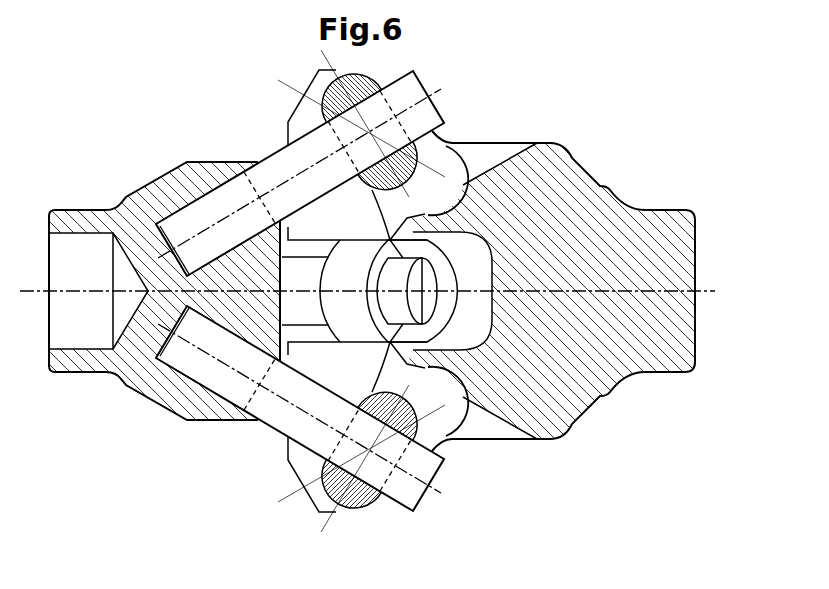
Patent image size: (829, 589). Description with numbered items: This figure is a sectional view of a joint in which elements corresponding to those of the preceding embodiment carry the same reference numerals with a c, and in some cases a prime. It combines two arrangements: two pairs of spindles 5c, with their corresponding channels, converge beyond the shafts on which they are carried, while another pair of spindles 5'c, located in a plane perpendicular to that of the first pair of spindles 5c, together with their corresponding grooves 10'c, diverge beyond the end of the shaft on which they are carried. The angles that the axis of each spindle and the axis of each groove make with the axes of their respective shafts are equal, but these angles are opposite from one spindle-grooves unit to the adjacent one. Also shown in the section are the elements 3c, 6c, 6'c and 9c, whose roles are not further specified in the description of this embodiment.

The yoke 3c is at (157, 387).
The spindles 5c is at (272, 426).
The spindles 5'c is at (300, 314).
The roller 6c is at (353, 328).
The spherical roller ring 6'c is at (367, 290).
The housing body 9c is at (560, 186).
The grooves 10'c is at (477, 299).